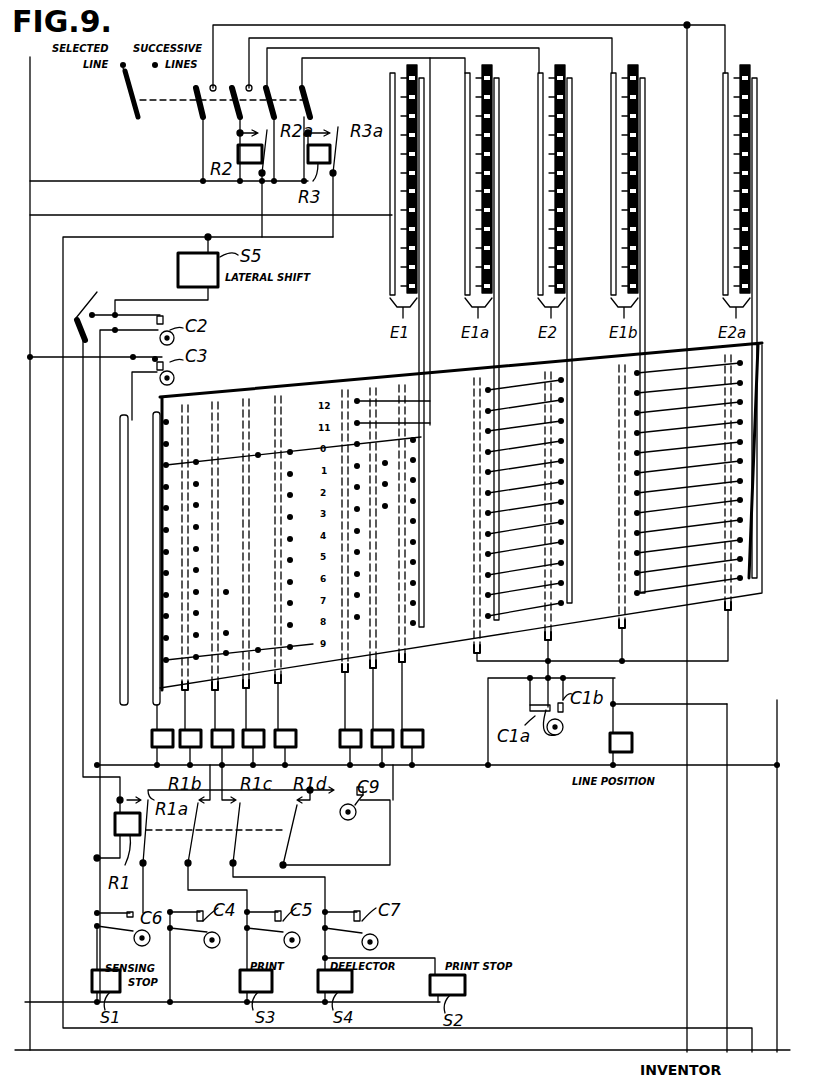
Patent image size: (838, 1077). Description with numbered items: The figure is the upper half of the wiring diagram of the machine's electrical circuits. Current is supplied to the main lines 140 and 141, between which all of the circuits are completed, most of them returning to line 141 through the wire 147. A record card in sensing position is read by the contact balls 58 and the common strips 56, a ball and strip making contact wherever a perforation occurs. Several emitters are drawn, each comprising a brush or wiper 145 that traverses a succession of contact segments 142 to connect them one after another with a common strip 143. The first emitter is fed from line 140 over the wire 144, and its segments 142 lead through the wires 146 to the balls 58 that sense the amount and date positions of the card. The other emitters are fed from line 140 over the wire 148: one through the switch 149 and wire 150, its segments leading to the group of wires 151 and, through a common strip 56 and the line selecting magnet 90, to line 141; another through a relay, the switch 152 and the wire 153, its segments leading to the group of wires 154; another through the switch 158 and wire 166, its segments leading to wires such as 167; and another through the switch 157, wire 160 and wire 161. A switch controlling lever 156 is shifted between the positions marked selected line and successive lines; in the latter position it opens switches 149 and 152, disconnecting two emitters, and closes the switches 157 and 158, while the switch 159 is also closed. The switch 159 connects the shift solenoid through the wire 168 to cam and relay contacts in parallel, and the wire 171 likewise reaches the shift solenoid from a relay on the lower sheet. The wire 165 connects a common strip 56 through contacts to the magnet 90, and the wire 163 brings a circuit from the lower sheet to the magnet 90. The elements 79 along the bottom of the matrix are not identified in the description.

The main line 140 is at (30, 133).
The main line 141 is at (777, 712).
The contact segments 142 is at (418, 128).
The common strip 143 is at (390, 183).
The wire 144 is at (150, 213).
The brush 145 is at (388, 303).
The wires 146 is at (419, 233).
The wire 147 is at (447, 760).
The wire 148 is at (148, 180).
The switch 149 is at (270, 87).
The wire 150 is at (363, 62).
The group of wires 151 is at (572, 245).
The switch 152 is at (312, 110).
The wire 153 is at (388, 241).
The group of wires 154 is at (499, 240).
The switch controlling lever 156 is at (127, 99).
The switch 157 is at (195, 92).
The switch 158 is at (234, 134).
The switch 159 is at (97, 292).
The wire 160 is at (213, 60).
The wire 161 is at (687, 48).
The wire 163 is at (727, 900).
The wire 165 is at (728, 650).
The wire 166 is at (249, 75).
The wire 167 is at (645, 160).
The wire 168 is at (80, 780).
The wire 171 is at (63, 255).
The common strips 56 is at (278, 396).
The contact balls 58 is at (138, 420).
The relay 79 is at (210, 730).
The line selecting magnet 90 is at (622, 733).